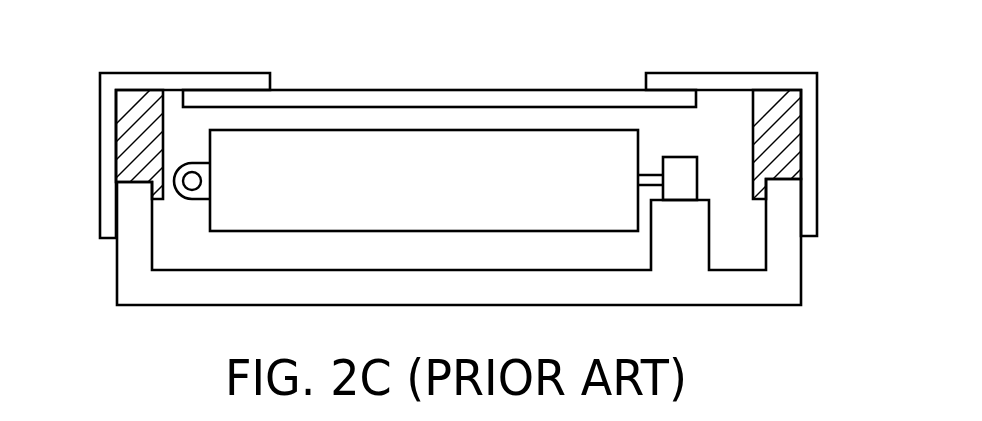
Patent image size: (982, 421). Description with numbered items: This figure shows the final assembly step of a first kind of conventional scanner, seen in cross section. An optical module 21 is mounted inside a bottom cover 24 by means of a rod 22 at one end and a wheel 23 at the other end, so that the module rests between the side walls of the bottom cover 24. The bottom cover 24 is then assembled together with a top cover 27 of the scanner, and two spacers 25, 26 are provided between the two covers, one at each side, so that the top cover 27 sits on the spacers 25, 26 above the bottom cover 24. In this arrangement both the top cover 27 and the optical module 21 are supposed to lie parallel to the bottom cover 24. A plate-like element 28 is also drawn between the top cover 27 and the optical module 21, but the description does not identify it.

The optical module 21 is at (451, 162).
The rod 22 is at (196, 174).
The wheel 23 is at (683, 178).
The bottom cover 24 is at (652, 308).
The spacer 25 is at (128, 137).
The spacer 26 is at (795, 140).
The top cover 27 is at (170, 71).
The cover plate 28 is at (548, 101).